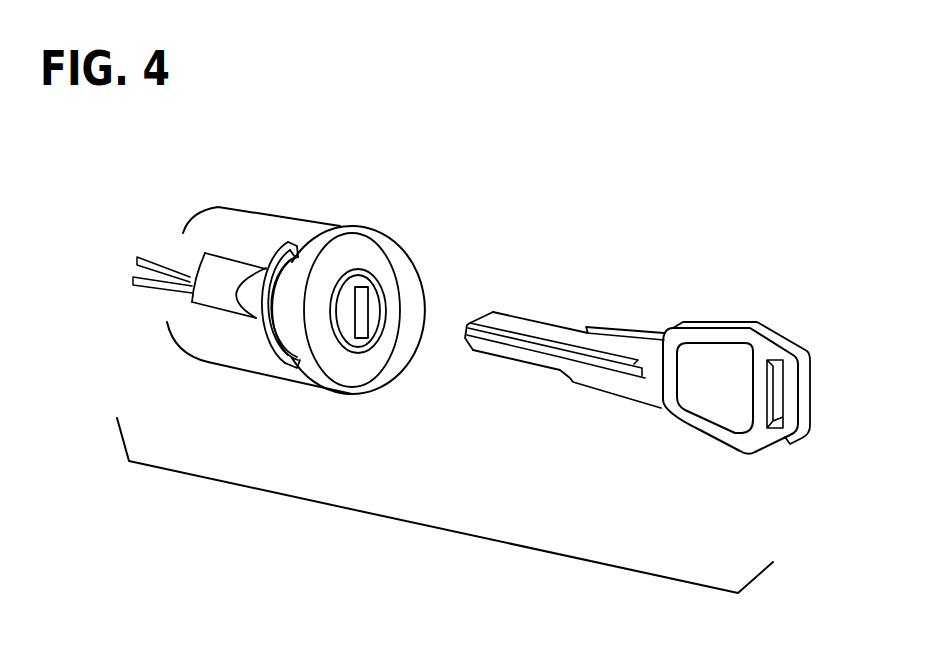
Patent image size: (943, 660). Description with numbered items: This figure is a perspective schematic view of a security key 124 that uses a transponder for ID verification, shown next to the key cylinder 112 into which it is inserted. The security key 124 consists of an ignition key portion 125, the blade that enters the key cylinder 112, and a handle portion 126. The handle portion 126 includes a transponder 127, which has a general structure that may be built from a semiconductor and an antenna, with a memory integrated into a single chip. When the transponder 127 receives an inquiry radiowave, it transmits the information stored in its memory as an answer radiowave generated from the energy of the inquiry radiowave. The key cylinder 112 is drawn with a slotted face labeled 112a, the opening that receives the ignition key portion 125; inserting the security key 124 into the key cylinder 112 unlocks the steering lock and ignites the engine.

The key cylinder 112 is at (308, 304).
The key hole 112a is at (363, 322).
The security key 124 is at (637, 337).
The ignition key portion 125 is at (527, 324).
The handle portion 126 is at (748, 321).
The transponder 127 is at (713, 413).